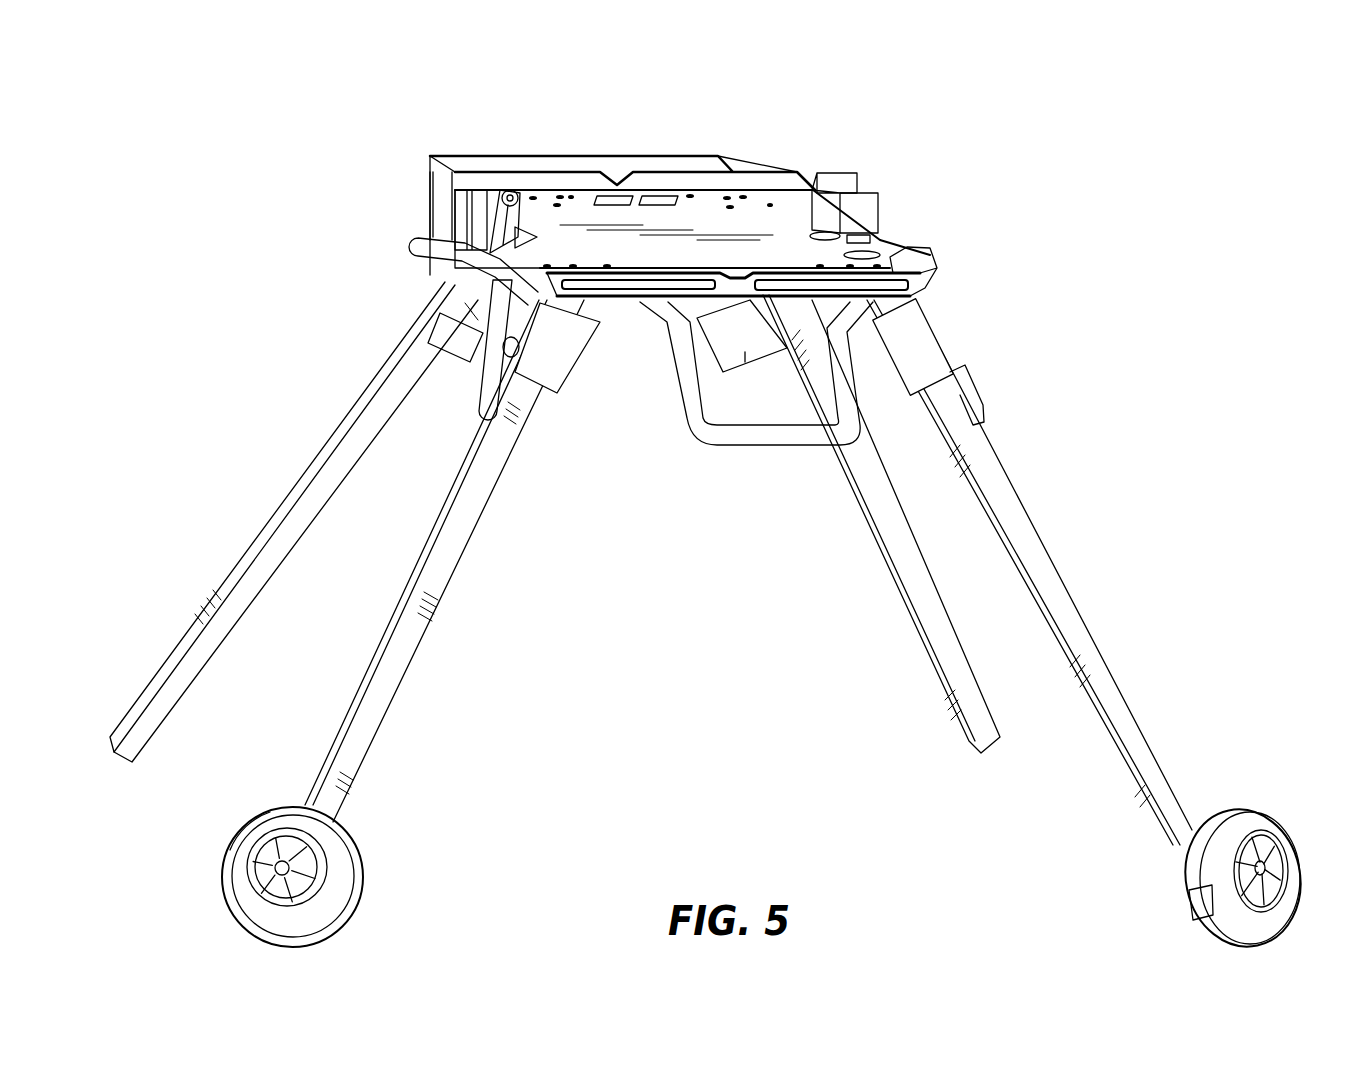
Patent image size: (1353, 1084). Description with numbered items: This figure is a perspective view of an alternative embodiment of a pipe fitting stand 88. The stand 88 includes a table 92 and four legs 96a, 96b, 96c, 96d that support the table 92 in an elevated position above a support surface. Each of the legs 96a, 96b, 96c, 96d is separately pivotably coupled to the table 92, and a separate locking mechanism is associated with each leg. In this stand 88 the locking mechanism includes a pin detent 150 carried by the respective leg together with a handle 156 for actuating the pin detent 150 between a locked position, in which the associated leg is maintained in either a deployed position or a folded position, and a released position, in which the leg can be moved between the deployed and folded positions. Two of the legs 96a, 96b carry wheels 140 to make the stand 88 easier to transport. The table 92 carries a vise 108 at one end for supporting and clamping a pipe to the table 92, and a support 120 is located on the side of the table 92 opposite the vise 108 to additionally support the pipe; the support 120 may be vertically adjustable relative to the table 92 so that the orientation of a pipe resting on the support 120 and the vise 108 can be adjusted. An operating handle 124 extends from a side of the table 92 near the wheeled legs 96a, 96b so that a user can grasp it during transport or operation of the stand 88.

The pipe fitting stand 88 is at (548, 108).
The table 92 is at (660, 218).
The vise 108 is at (400, 199).
The support 120 is at (870, 208).
The operating handle 124 is at (745, 445).
The pin detent 150 is at (560, 350).
The handle 156 is at (480, 393).
The leg 96a is at (387, 672).
The leg 96b is at (1048, 580).
The leg 96c is at (220, 583).
The leg 96d is at (943, 647).
The wheel 140 is at (337, 863).